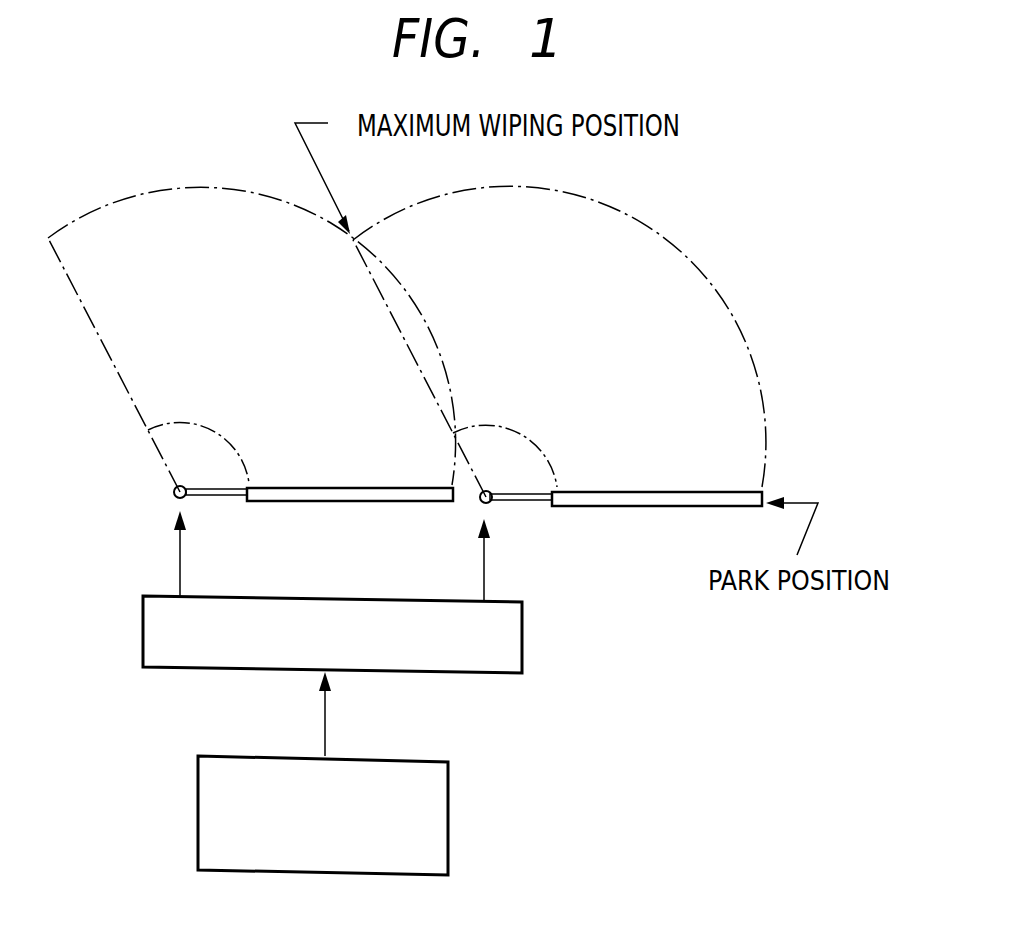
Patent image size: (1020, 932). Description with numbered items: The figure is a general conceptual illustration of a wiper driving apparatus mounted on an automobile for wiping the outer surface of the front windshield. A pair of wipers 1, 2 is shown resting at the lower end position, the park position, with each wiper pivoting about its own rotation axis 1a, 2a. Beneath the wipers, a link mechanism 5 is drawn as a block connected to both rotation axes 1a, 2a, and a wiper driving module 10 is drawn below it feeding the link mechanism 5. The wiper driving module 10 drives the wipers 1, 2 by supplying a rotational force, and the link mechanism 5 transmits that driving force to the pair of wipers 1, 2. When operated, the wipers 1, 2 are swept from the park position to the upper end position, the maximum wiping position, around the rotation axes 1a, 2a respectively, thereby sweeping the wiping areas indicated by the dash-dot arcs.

The wiper 1 is at (665, 504).
The rotation axis 1a is at (492, 504).
The wiper 2 is at (340, 502).
The rotation axis 2a is at (176, 503).
The link mechanism 5 is at (522, 632).
The wiper driving module 10 is at (448, 800).